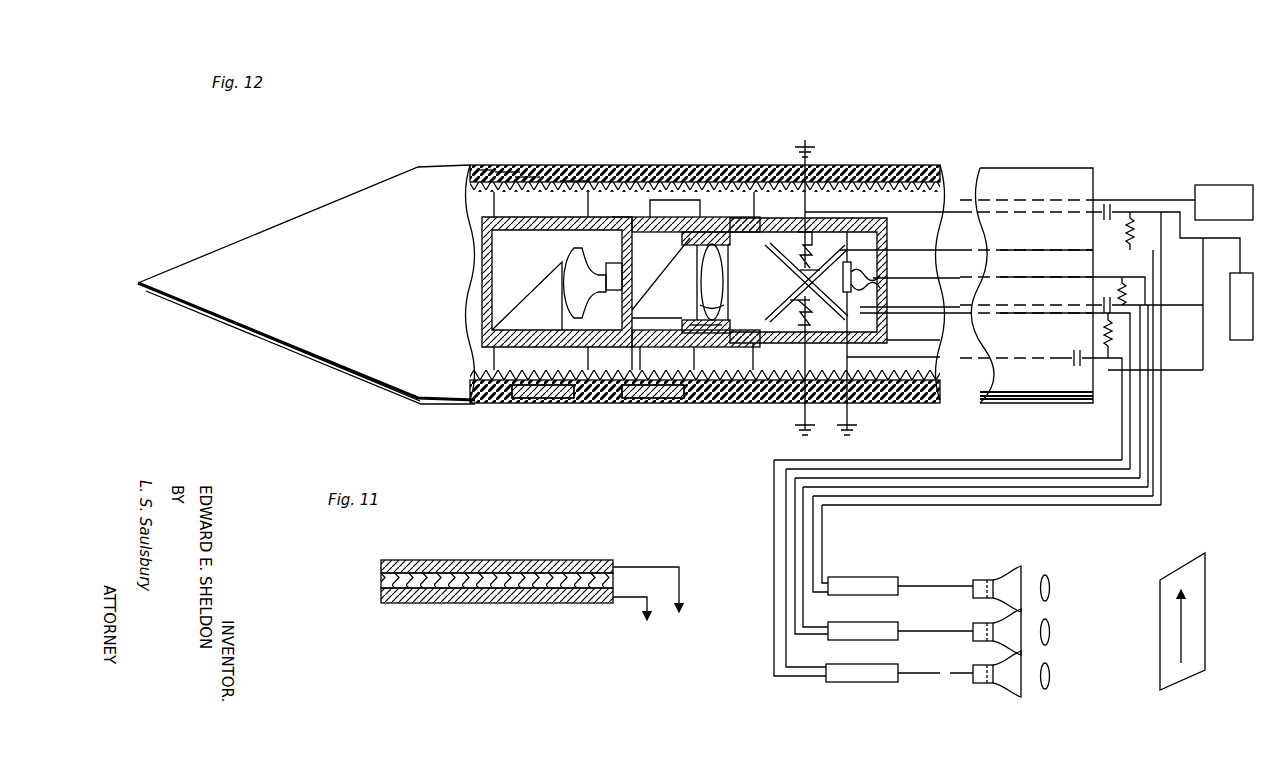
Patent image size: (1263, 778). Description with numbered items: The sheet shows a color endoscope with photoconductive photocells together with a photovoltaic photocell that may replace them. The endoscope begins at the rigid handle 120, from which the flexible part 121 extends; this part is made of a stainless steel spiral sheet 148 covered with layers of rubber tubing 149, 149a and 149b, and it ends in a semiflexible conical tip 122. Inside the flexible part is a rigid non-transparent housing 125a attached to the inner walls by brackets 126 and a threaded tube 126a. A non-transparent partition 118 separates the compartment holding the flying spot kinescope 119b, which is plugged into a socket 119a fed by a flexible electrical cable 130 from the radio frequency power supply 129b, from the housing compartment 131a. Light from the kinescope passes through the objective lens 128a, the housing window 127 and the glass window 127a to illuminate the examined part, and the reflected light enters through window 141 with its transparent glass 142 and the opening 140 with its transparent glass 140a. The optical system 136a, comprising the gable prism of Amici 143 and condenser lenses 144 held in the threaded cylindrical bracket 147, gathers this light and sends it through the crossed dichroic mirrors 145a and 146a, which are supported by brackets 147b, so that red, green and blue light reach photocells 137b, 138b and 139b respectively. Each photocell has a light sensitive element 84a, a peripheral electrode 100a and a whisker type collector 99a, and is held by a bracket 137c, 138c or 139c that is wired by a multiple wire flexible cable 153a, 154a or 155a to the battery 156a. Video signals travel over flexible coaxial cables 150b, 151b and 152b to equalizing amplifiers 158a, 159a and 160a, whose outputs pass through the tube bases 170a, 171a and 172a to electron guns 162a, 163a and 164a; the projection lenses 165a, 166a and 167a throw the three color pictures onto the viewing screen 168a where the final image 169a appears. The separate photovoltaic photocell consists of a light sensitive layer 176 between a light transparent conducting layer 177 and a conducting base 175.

In FIG. 12, the semiflexible tip 122 is at (332, 212).
In FIG. 12, the flexible part 121 is at (706, 166).
In FIG. 12, the rubber tubing layer 149b is at (484, 170).
In FIG. 12, the rubber tubing layer 149a is at (500, 173).
In FIG. 12, the rubber tubing layer 149 is at (522, 176).
In FIG. 12, the stainless steel spiral sheet 148 is at (572, 181).
In FIG. 12, the housing 125a is at (620, 222).
In FIG. 12, the transparent glass 142 is at (666, 404).
In FIG. 12, the glass window 127a is at (538, 402).
In FIG. 12, the window 141 is at (632, 404).
In FIG. 12, the window 127 is at (556, 347).
In FIG. 12, the objective lens 128a is at (548, 325).
In FIG. 12, the flying spot kinescope 119b is at (592, 266).
In FIG. 12, the socket 119a is at (628, 276).
In FIG. 12, the brackets 126 is at (500, 211).
In FIG. 12, the threaded tube 126a is at (482, 222).
In FIG. 12, the cylindrical bracket 147 is at (686, 240).
In FIG. 12, the gable prism of Amici 143 is at (661, 274).
In FIG. 12, the non-transparent partition 118 is at (640, 311).
In FIG. 12, the condenser lenses 144 is at (718, 270).
In FIG. 12, the optical system 136a is at (720, 306).
In FIG. 12, the brackets 147b is at (722, 325).
In FIG. 12, the bracket 139c is at (890, 246).
In FIG. 12, the housing compartment 131a is at (799, 282).
In FIG. 12, the dichroic mirror 146a is at (785, 291).
In FIG. 12, the dichroic mirror 145a is at (825, 282).
In FIG. 12, the photocell 137b is at (791, 204).
In FIG. 12, the bracket 137c is at (832, 222).
In FIG. 12, the photocell 138b is at (819, 365).
In FIG. 12, the bracket 138c is at (800, 346).
In FIG. 12, the photocell 139b is at (888, 333).
In FIG. 12, the light sensitive element 84a is at (865, 265).
In FIG. 12, the whisker type collector 99a is at (866, 276).
In FIG. 12, the peripheral electrode 100a is at (875, 330).
In FIG. 12, the transparent glass 140a is at (640, 348).
In FIG. 12, the opening 140 is at (658, 358).
In FIG. 12, the handle 120 is at (1036, 168).
In FIG. 12, the flexible coaxial cable 150b is at (1026, 250).
In FIG. 12, the flexible coaxial cable 151b is at (1028, 277).
In FIG. 12, the flexible coaxial cable 152b is at (1020, 313).
In FIG. 12, the flexible electrical cable 130 is at (1120, 200).
In FIG. 12, the radio frequency power supply 129b is at (1225, 190).
In FIG. 12, the multiple wire flexible cable 153a is at (1147, 206).
In FIG. 12, the battery 156a is at (1240, 340).
In FIG. 12, the multiple wire flexible cable 154a is at (1176, 300).
In FIG. 12, the multiple wire flexible cable 155a is at (1180, 366).
In FIG. 12, the amplifier 158a is at (857, 577).
In FIG. 12, the amplifier 159a is at (848, 622).
In FIG. 12, the amplifier 160a is at (848, 666).
In FIG. 12, the tube base 170a is at (988, 580).
In FIG. 12, the tube base 171a is at (988, 624).
In FIG. 12, the tube base 172a is at (988, 666).
In FIG. 12, the electron gun 162a is at (1012, 578).
In FIG. 12, the electron gun 163a is at (1016, 625).
In FIG. 12, the electron gun 164a is at (1016, 668).
In FIG. 12, the projection lens 165a is at (1050, 588).
In FIG. 12, the projection lens 166a is at (1050, 632).
In FIG. 12, the projection lens 167a is at (1050, 676).
In FIG. 12, the viewing screen 168a is at (1198, 645).
In FIG. 12, the final image 169a is at (1183, 615).
In FIG. 11, the light transparent conducting layer 177 is at (470, 562).
In FIG. 11, the light sensitive layer 176 is at (381, 580).
In FIG. 11, the conducting base 175 is at (454, 603).